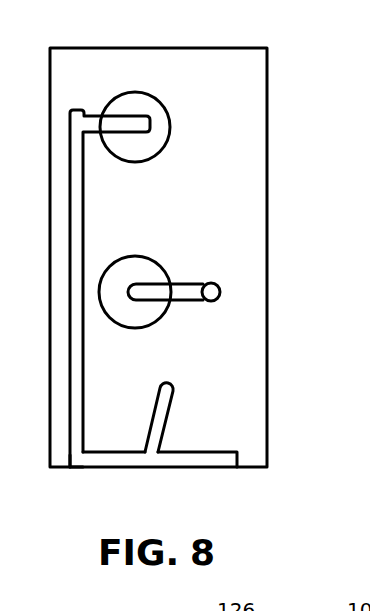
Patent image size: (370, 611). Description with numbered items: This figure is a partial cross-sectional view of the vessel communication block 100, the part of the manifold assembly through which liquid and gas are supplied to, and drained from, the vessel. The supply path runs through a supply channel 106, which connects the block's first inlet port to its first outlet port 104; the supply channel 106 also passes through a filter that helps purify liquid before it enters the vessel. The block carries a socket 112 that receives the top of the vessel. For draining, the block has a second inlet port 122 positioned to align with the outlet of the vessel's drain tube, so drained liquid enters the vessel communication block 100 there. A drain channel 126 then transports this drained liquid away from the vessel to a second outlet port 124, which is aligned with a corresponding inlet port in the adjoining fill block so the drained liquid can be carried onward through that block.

The vessel communication block 100 is at (255, 202).
The first outlet port 104 is at (151, 455).
The supply channel 106 is at (178, 290).
The socket 112 is at (222, 460).
The second inlet port 122 is at (75, 457).
The second outlet port 124 is at (155, 122).
The drain channel 126 is at (87, 215).